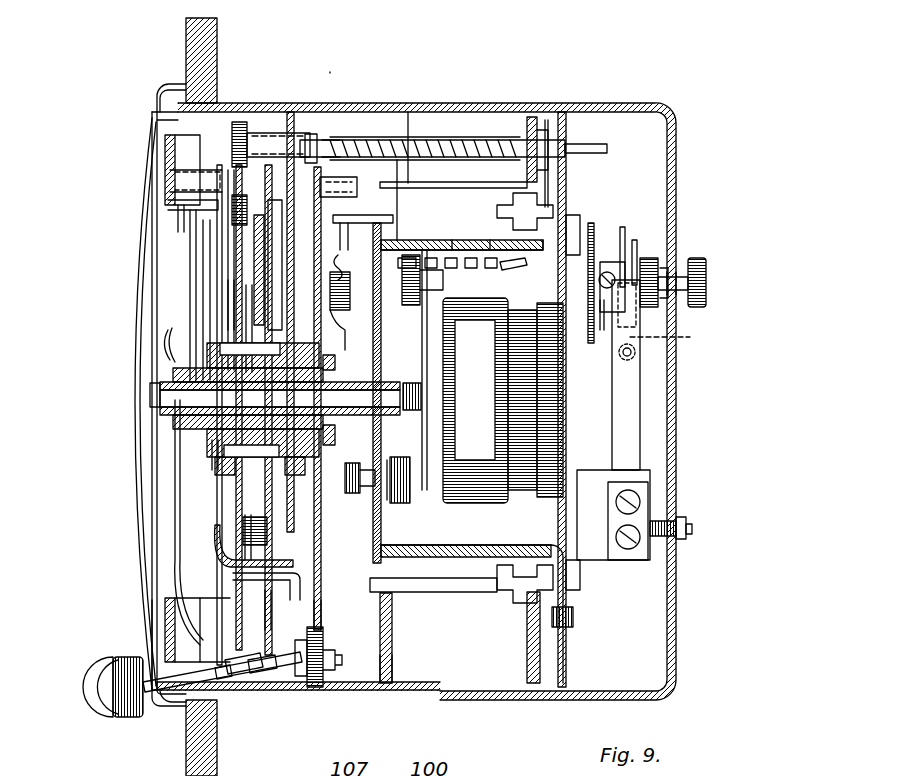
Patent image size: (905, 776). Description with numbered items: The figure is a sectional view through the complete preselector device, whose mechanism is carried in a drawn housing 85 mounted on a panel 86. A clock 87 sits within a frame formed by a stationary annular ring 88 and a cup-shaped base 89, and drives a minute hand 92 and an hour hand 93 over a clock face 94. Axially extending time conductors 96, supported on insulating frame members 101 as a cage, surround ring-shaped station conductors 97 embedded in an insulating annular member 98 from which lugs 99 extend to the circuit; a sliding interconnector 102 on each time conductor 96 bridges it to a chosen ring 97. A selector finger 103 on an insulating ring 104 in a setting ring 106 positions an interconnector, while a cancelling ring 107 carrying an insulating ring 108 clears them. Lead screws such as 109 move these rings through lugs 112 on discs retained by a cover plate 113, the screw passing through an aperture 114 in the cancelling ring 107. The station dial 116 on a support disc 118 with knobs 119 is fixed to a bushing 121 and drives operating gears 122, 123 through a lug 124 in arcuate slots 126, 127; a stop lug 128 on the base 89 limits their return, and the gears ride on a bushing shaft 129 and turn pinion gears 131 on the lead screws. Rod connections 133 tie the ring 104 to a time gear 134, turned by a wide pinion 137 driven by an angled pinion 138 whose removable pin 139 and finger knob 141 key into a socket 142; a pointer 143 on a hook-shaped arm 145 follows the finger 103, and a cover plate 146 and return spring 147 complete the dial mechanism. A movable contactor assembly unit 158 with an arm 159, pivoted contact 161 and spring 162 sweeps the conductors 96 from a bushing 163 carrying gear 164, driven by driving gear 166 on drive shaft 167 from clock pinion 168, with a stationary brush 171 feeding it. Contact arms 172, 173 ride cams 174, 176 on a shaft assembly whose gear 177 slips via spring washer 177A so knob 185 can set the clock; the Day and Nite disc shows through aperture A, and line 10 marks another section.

The drawn housing 85 is at (622, 103).
The panel 86 is at (186, 37).
The clock 87 is at (487, 497).
The stationary annular ring 88 is at (568, 112).
The cup-shaped base 89 is at (283, 112).
The minute hand 92 is at (175, 440).
The hour hand 93 is at (168, 332).
The clock face 94 is at (192, 260).
The time conductor 96 is at (405, 183).
The ring-shaped conductor 97 is at (452, 240).
The annular member of insulating material 98 is at (490, 240).
The lug 99 is at (497, 268).
The frame member 101 is at (380, 578).
The sliding interconnector 102 is at (580, 217).
The selector finger 103 is at (537, 199).
The insulating ring 104 is at (537, 178).
The setting ring 106 is at (527, 660).
The cancelling ring 107 is at (392, 660).
The insulating ring 108 is at (380, 197).
The lead screw 109 is at (462, 140).
The lug 112 is at (595, 137).
The cover plate 113 is at (548, 120).
The aperture 114 is at (380, 140).
The station dial 116 is at (165, 157).
The support disc 118 is at (137, 205).
The knob 119 is at (205, 178).
The bushing 121 is at (215, 446).
The operating gear 122 is at (240, 642).
The operating gear 123 is at (282, 630).
The lug 124 is at (240, 565).
The arcuate slot 126 is at (285, 625).
The arcuate slot 127 is at (280, 580).
The stop lug 128 is at (300, 563).
The bushing shaft 129 is at (250, 350).
The pinion gear 131 is at (240, 130).
The rod connection 133 is at (405, 112).
The time gear 134 is at (372, 215).
The pinion gear 137 is at (313, 690).
The pinion gear 138 is at (332, 690).
The removable pin 139 is at (170, 703).
The finger knob 141 is at (110, 700).
The socket 142 is at (258, 672).
The pointer 143 is at (178, 225).
The hook-shaped arm 145 is at (205, 285).
The cover plate 146 is at (160, 95).
The return spring 147 is at (232, 345).
The movable contactor assembly unit 158 is at (418, 365).
The arm 159 is at (374, 232).
The pivoted contact 161 is at (358, 200).
The spring 162 is at (410, 260).
The bushing 163 is at (302, 500).
The gear 164 is at (378, 350).
The driving gear 166 is at (427, 332).
The drive shaft 167 is at (478, 292).
The pinion 168 is at (600, 330).
The stationary brush 171 is at (345, 323).
The contact arm 172 is at (681, 337).
The contact arm 173 is at (625, 373).
The cam 174 is at (655, 298).
The cam 176 is at (672, 242).
The gear 177 is at (595, 237).
The spring washer 177A is at (600, 262).
The knob 185 is at (704, 265).
The section line 10 is at (318, 72).
The aperture A is at (165, 505).